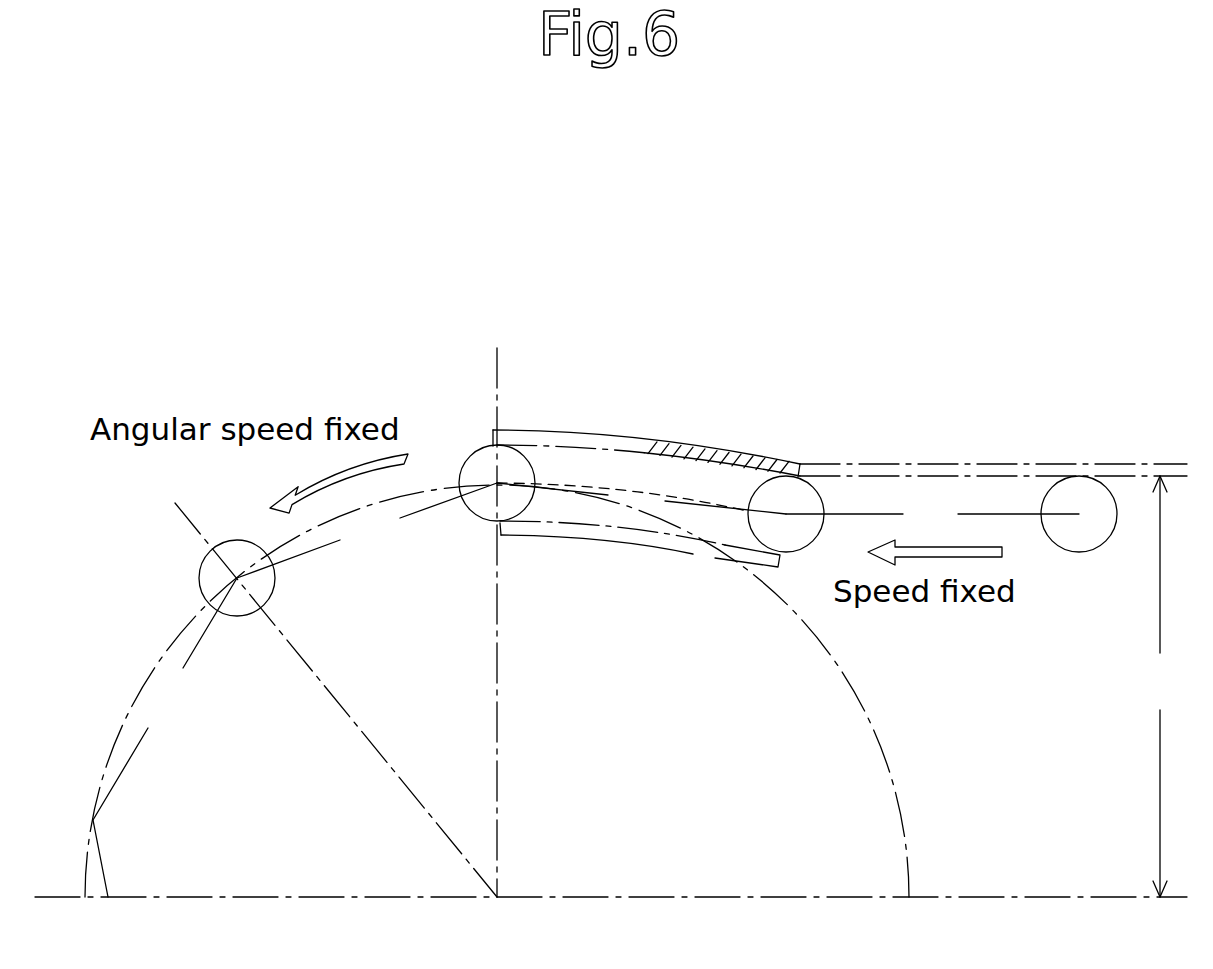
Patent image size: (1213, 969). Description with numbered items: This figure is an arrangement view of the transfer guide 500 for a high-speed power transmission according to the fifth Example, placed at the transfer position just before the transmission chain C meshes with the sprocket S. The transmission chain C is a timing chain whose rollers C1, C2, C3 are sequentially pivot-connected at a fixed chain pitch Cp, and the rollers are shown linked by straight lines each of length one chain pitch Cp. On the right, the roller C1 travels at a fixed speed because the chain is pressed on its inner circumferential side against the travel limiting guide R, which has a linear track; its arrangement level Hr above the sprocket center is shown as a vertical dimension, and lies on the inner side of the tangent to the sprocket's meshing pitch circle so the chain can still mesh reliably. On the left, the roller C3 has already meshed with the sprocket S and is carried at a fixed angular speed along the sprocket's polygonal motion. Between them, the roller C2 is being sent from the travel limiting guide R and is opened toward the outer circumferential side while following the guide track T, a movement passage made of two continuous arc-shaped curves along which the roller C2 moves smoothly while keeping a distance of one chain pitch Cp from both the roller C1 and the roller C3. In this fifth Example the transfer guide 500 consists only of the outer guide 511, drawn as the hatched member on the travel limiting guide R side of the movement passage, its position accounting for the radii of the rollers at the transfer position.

The outer guide 511 is at (683, 445).
The transfer guide for a high-speed power transmission 500 is at (709, 401).
The roller traveling on the travel limiting guide C1 is at (1083, 553).
The roller sent from the travel limiting guide C2 is at (803, 478).
The roller which has just meshed with the sprocket C3 is at (475, 452).
The transmission chain C is at (870, 513).
The travel limiting guide R is at (985, 463).
The guide track T is at (710, 500).
The sprocket S is at (592, 850).
The arrangement level of the travel limiting guide Hr is at (1163, 686).
The chain pitch Cp is at (586, 690).